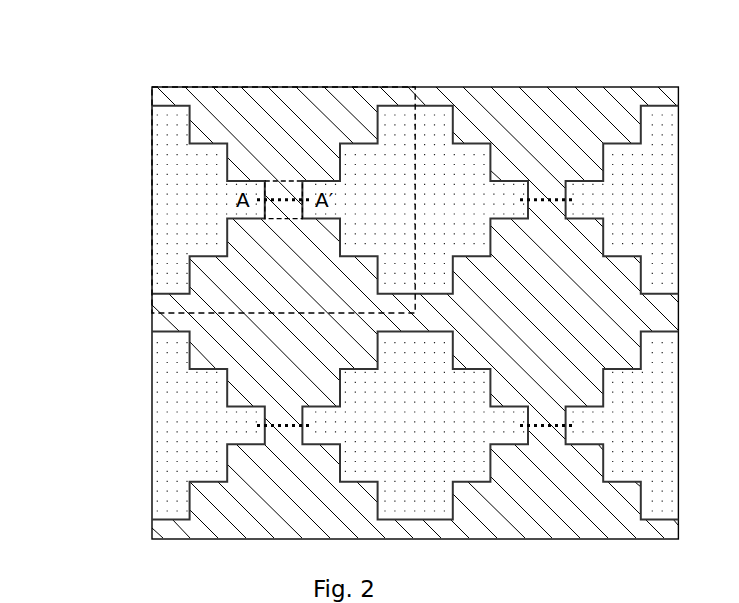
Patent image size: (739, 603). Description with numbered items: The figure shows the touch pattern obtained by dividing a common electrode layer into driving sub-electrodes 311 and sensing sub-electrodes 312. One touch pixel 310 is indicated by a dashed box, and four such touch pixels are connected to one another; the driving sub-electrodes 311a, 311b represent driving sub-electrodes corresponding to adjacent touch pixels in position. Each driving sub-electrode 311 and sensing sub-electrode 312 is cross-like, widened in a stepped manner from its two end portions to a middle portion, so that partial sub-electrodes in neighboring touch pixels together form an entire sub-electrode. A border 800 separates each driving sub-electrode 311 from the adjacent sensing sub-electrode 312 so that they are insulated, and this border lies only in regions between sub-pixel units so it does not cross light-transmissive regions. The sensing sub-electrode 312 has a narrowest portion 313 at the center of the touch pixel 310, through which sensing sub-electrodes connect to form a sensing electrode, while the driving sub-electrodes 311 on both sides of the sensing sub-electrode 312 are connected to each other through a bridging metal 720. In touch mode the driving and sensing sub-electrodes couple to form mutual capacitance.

The touch pixel 310 is at (408, 87).
The driving sub-electrode 311 is at (173, 445).
The driving sub-electrode of adjacent touch pixel 311a is at (173, 193).
The driving sub-electrode of adjacent touch pixel 311b is at (440, 137).
The sensing sub-electrode 312 is at (302, 140).
The narrowest portion 313 is at (282, 222).
The bridging metal 720 is at (315, 218).
The border 800 is at (190, 517).